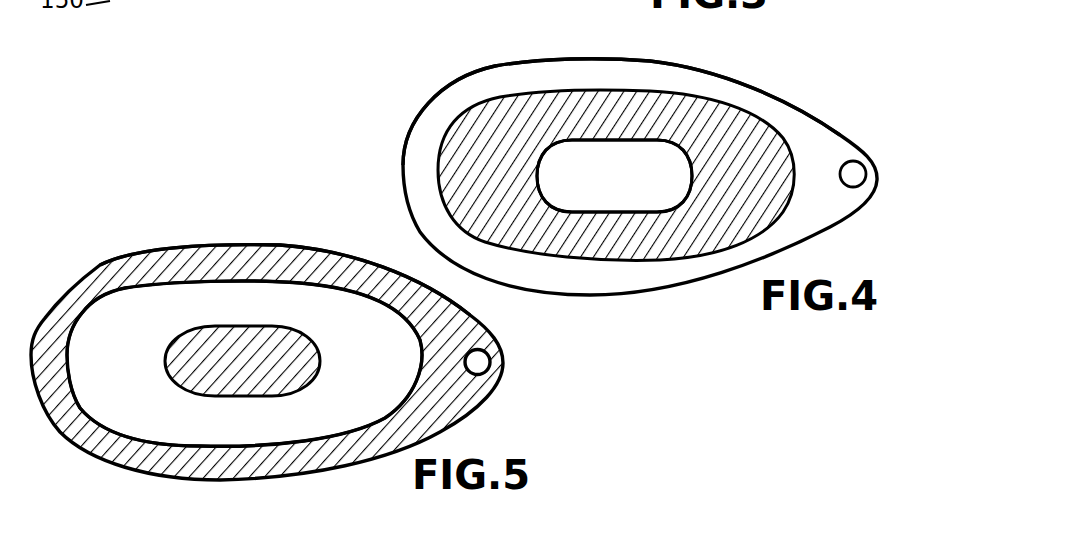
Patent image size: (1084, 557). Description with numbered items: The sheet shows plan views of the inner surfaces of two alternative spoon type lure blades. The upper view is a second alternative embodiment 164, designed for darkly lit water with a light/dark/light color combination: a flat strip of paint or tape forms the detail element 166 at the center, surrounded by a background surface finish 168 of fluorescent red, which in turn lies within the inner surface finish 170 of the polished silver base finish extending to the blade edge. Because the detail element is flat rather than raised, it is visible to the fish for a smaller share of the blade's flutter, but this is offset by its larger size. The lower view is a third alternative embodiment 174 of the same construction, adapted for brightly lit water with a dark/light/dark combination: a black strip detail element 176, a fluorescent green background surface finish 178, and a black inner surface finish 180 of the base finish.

In FIG. 4, the second alternative embodiment of a spoon type lure 164 is at (822, 92).
In FIG. 4, the detail element 166 is at (594, 188).
In FIG. 4, the background surface finish 168 is at (467, 116).
In FIG. 4, the inner surface finish 170 is at (553, 72).
In FIG. 5, the third alternative embodiment of a spoon type lure 174 is at (90, 243).
In FIG. 5, the detail element 176 is at (321, 360).
In FIG. 5, the background surface finish 178 is at (145, 368).
In FIG. 5, the inner surface finish 180 is at (224, 256).